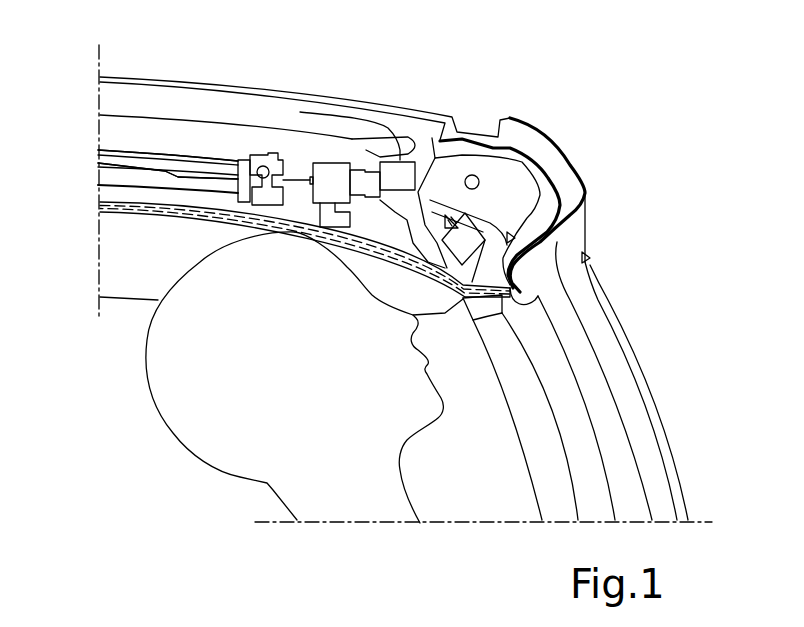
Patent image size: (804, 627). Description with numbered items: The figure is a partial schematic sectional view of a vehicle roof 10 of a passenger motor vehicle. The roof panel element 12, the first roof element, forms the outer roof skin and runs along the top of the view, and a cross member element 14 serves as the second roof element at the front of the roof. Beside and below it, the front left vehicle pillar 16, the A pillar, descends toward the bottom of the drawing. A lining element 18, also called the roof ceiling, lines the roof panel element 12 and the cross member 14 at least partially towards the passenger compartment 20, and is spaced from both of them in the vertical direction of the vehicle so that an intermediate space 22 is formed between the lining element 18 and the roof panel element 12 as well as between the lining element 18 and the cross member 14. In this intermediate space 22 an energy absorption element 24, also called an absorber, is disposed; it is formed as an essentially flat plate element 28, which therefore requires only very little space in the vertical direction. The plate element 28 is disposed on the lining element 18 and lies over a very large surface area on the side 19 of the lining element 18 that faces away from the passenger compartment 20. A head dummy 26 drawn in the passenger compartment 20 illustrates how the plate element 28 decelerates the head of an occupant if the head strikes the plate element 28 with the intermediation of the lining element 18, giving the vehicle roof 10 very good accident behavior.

The vehicle roof 10 is at (586, 87).
The roof panel element 12 is at (298, 112).
The cross member element 14 is at (547, 172).
The vehicle pillar 16 is at (638, 316).
The lining element 18 is at (118, 245).
The side of the lining element 19 is at (122, 202).
The passenger compartment 20 is at (116, 366).
The intermediate space 22 is at (318, 162).
The energy absorption element 24 is at (187, 203).
The head dummy 26 is at (347, 510).
The plate element 28 is at (187, 203).